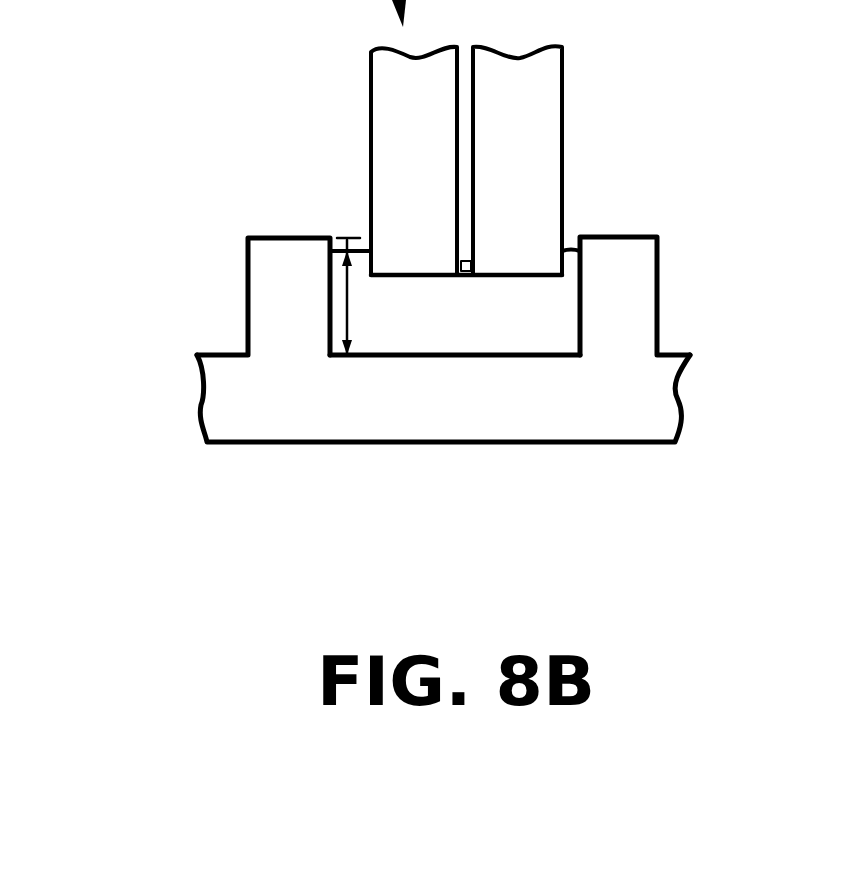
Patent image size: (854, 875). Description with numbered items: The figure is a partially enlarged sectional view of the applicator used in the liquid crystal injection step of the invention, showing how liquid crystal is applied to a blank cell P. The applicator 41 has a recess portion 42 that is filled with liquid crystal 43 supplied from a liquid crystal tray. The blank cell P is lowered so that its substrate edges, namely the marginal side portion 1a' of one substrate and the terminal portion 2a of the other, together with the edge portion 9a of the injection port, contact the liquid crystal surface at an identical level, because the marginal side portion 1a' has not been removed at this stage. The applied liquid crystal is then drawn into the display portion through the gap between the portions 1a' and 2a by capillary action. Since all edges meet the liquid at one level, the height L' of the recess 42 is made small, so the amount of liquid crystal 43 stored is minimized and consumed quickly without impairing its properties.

The marginal side portion 1a' is at (413, 161).
The terminal portion 2a is at (530, 95).
The blank cell P is at (600, 111).
The edge portion of the injection port 9a is at (467, 262).
The applicator 41 is at (617, 408).
The recess portion 42 is at (170, 225).
The liquid crystal 43 is at (463, 325).
The height or depth of the recess portion L' is at (361, 296).